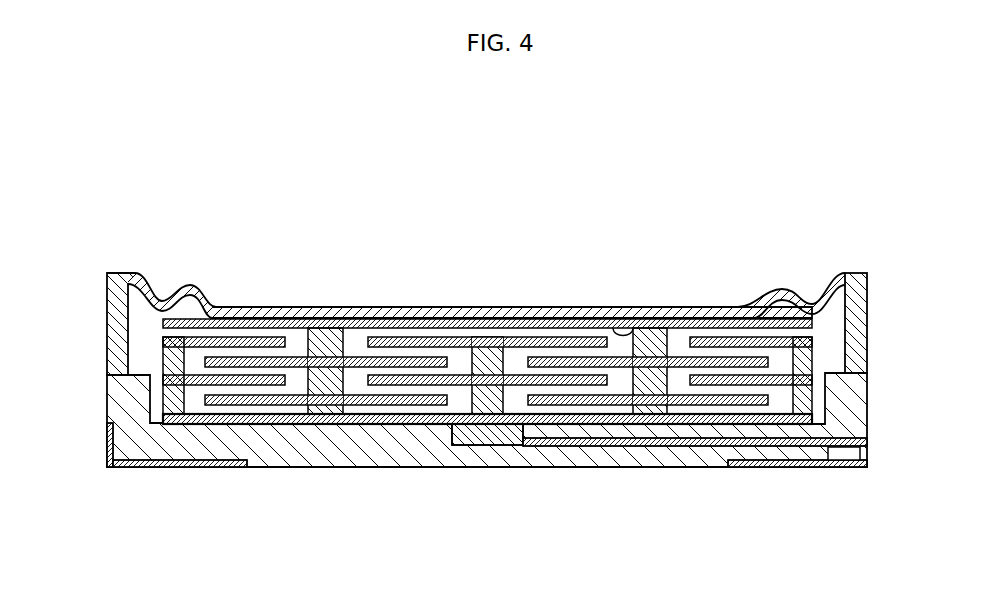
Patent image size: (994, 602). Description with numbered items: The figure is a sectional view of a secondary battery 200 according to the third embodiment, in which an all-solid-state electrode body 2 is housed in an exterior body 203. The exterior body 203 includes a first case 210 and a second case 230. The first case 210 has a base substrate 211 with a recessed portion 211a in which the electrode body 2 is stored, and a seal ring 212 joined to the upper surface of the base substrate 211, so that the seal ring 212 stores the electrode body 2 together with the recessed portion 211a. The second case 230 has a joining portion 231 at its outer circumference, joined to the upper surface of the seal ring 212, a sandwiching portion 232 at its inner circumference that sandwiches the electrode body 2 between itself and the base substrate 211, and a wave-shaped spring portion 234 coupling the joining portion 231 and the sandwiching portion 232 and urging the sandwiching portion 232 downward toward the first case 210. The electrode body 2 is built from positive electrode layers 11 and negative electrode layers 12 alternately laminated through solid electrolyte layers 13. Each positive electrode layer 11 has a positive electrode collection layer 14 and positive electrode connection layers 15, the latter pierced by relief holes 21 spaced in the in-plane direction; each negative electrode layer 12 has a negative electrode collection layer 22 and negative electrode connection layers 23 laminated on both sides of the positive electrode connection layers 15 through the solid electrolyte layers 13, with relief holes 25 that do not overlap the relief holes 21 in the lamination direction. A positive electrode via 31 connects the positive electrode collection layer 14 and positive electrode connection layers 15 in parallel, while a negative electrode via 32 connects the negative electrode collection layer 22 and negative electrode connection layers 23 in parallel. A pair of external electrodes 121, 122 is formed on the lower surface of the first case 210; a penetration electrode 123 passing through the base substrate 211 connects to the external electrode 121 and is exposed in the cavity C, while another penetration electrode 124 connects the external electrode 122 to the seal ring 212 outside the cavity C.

The secondary battery 200 is at (476, 382).
The first case 210 is at (448, 462).
The base substrate 211 is at (305, 452).
The recessed portion 211a is at (167, 358).
The seal ring 212 is at (181, 365).
The second case 230 is at (474, 280).
The joining portion 231 is at (117, 272).
The sandwiching portion 232 is at (273, 306).
The spring portion 234 is at (190, 284).
The negative electrode layer 12 is at (750, 299).
The exterior body 203 is at (97, 391).
The relief hole 21 is at (487, 381).
The negative electrode collection layer 22 is at (388, 323).
The negative electrode connection layer 23 is at (308, 392).
The relief hole 25 is at (447, 360).
The negative electrode via 32 is at (666, 340).
The cavity C is at (638, 328).
The positive electrode connection layer 15 is at (588, 350).
The solid electrolyte layer 13 is at (320, 410).
The positive electrode collection layer 14 is at (432, 423).
The positive electrode via 31 is at (462, 410).
The penetration electrode 123 is at (640, 447).
The positive electrode layer 11 is at (710, 452).
The external electrode 121 is at (768, 470).
The external electrode 122 is at (135, 468).
The penetration electrode 124 is at (108, 440).
The electrode body 2 is at (816, 455).